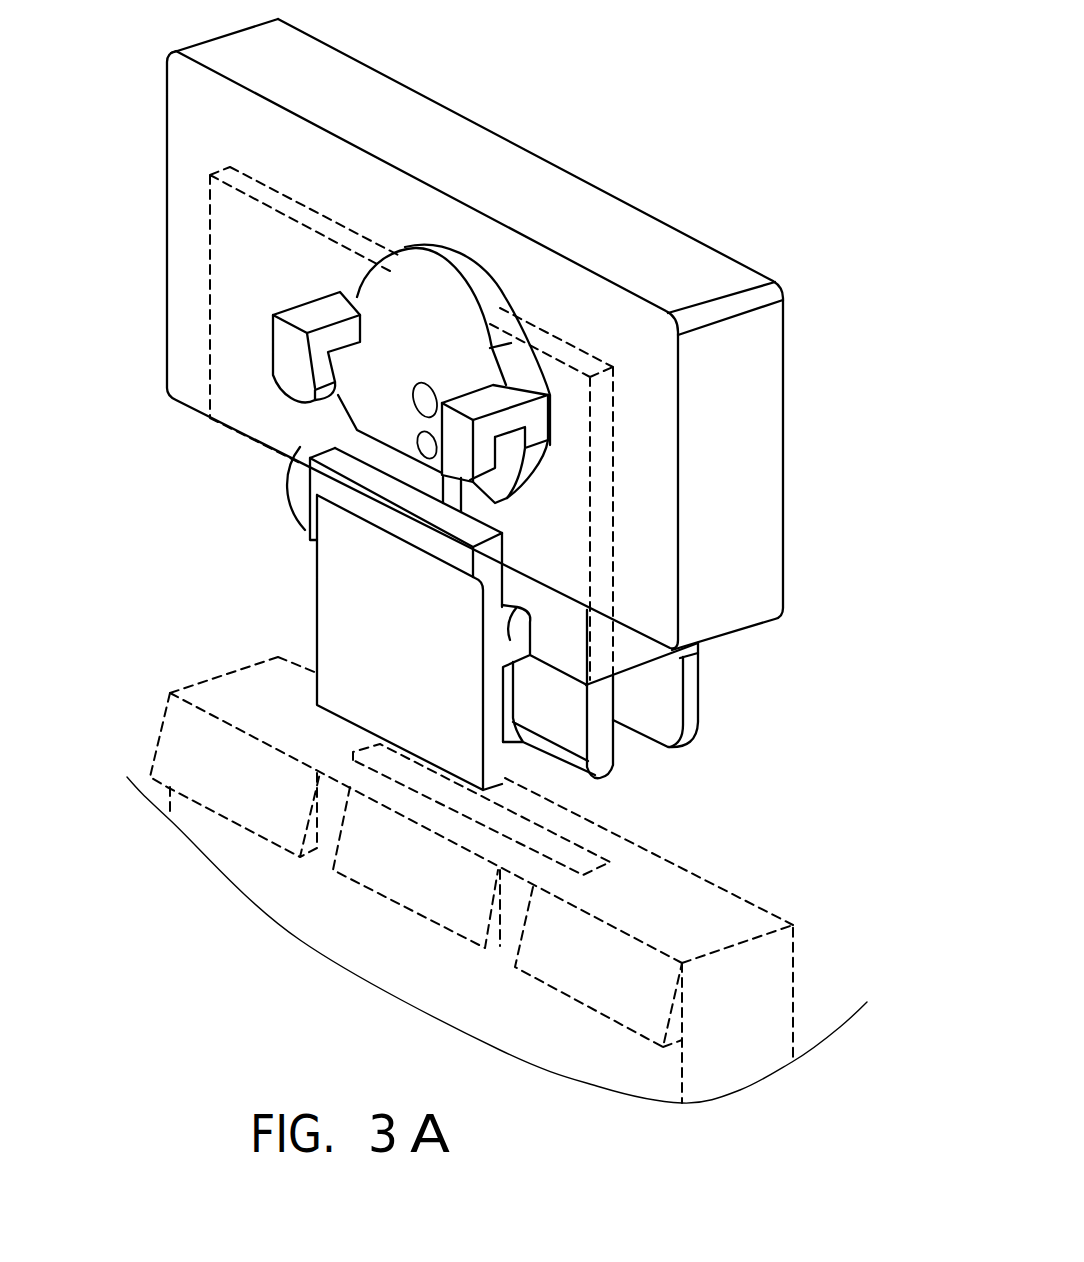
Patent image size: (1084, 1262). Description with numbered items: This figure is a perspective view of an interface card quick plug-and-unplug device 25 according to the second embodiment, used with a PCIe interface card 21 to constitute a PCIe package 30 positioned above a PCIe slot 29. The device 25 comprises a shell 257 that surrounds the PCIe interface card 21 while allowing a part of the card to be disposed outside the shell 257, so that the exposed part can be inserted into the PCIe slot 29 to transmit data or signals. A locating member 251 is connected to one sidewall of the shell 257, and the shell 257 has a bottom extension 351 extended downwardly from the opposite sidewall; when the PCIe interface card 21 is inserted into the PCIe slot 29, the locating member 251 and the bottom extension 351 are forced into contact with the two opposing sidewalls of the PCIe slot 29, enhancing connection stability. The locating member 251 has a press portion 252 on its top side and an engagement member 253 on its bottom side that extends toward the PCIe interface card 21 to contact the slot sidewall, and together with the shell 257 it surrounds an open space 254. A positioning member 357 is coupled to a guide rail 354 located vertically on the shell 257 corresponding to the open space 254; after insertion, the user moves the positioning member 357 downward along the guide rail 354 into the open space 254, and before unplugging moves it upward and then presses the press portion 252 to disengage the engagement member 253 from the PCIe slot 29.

The PCIe package 30 is at (128, 60).
The PCIe interface card 21 is at (220, 270).
The shell 257 is at (778, 398).
The positioning member 357 is at (495, 301).
The guide rail 354 is at (459, 503).
The bottom extension 351 is at (695, 686).
The interface card quick plug-and-unplug device 25 is at (426, 625).
The locating member 251 is at (322, 628).
The press portion 252 is at (302, 468).
The engagement member 253 is at (507, 765).
The open space 254 is at (515, 589).
The PCIe slot 29 is at (696, 853).